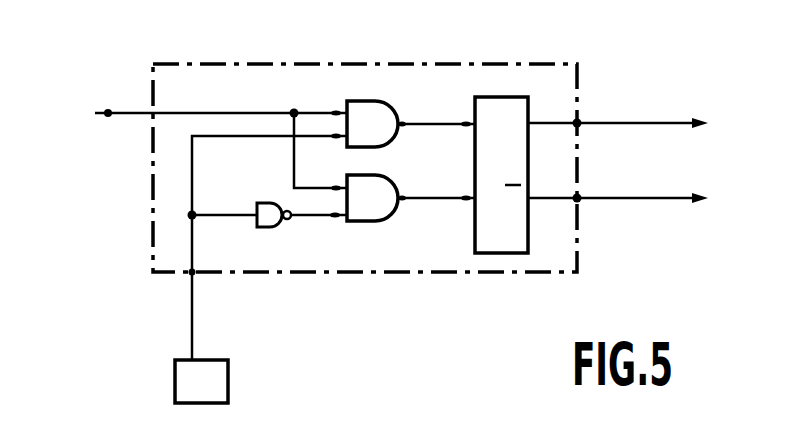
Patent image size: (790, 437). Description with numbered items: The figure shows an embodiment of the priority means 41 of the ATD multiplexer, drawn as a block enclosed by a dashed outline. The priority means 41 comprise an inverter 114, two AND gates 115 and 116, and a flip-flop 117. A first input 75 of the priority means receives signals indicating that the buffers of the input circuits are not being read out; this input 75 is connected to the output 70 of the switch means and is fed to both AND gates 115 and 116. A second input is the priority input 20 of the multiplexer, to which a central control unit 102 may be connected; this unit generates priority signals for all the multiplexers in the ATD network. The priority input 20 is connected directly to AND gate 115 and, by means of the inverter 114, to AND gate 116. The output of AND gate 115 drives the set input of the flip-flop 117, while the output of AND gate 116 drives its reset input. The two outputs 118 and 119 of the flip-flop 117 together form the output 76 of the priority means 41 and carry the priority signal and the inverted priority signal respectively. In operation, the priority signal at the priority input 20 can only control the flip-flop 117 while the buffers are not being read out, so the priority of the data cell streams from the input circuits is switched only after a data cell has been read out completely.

The priority means 41 is at (369, 62).
The output of switch means 70 is at (209, 113).
The input 75 is at (293, 108).
The priority input 20 is at (194, 274).
The inverter 114 is at (270, 228).
The AND gate 115 is at (387, 143).
The AND gate 116 is at (385, 220).
The flip-flop 117 is at (473, 218).
The output of flip-flop 118 is at (530, 120).
The output of flip-flop 119 is at (530, 203).
The output of priority means 76 is at (579, 126).
The central control unit 102 is at (228, 378).